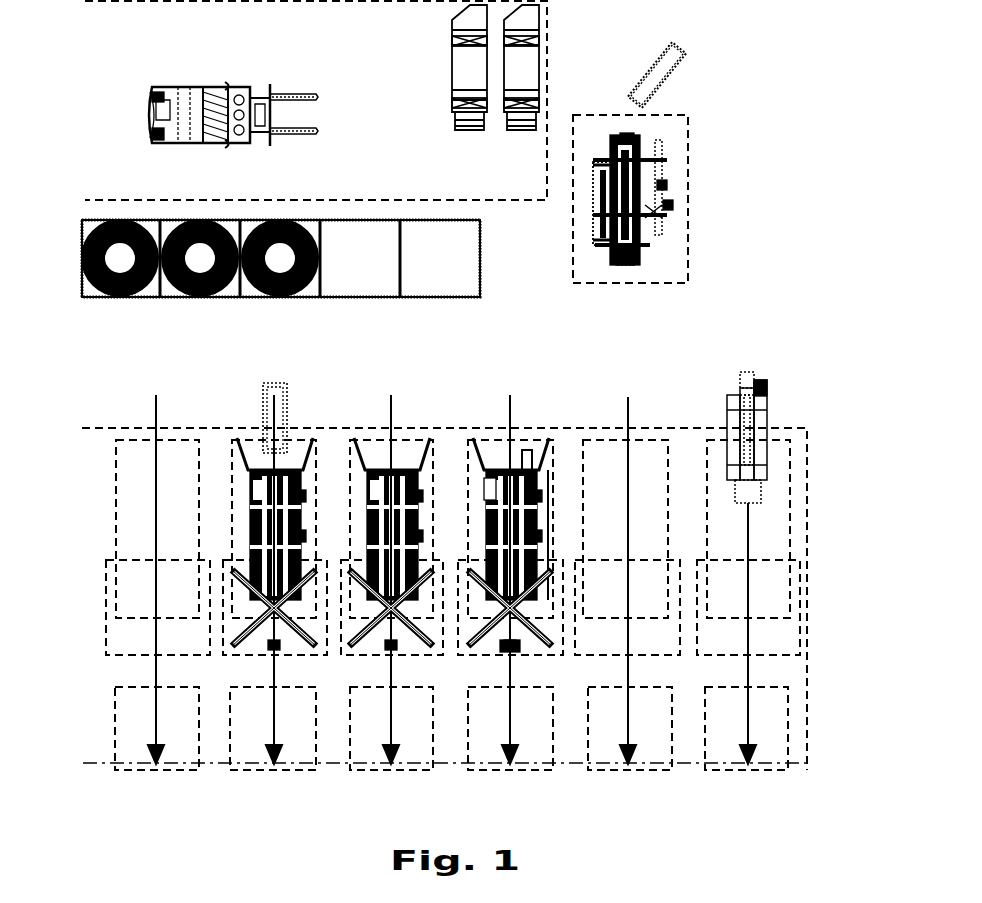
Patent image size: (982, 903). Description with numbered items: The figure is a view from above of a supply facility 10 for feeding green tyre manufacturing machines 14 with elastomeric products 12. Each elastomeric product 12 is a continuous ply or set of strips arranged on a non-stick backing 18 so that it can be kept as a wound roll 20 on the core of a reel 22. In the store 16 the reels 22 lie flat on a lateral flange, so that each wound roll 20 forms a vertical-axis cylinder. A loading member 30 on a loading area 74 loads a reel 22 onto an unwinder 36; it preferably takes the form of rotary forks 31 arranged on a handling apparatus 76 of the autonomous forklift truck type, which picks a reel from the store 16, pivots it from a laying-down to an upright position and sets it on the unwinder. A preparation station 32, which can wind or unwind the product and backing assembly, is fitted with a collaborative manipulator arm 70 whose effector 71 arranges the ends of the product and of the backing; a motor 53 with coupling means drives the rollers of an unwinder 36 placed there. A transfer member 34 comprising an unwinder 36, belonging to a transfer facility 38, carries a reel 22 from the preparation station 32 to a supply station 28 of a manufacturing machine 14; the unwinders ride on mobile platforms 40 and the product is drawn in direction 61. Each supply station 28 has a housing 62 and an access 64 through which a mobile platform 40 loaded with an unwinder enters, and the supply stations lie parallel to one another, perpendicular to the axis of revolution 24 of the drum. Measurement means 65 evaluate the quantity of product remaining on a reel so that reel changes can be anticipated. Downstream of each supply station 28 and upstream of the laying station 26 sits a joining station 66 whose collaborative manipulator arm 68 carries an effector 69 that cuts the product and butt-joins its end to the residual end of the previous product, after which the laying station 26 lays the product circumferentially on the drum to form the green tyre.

The supply facility 10 is at (815, 62).
The elastomeric product 12 is at (640, 147).
The green tyre manufacturing machine 14 is at (808, 742).
The store 16 is at (100, 220).
The non-stick backing 18 is at (640, 252).
The wound roll 20 is at (200, 298).
The reel 22 is at (593, 220).
The axis of revolution 24 is at (83, 762).
The laying station 26 is at (115, 692).
The supply station 28 is at (232, 455).
The loading member 30 is at (345, 150).
The rotary forks 31 is at (290, 94).
The preparation station 32 is at (690, 128).
The transfer member 34 is at (780, 365).
The unwinder 36 is at (523, 65).
The transfer facility 38 is at (805, 293).
The mobile platform 40 is at (688, 57).
The motor 53 is at (600, 248).
The direction in which the product is drawn 61 is at (393, 410).
The housing 62 is at (490, 470).
The access 64 is at (528, 460).
The measurement means 65 is at (543, 528).
The joining station 66 is at (106, 600).
The collaborative manipulator arm 68 is at (515, 658).
The effector 69 is at (548, 609).
The collaborative manipulator arm 70 is at (660, 200).
The effector 71 is at (665, 215).
The loading area 74 is at (130, 3).
The handling apparatus 76 is at (190, 86).